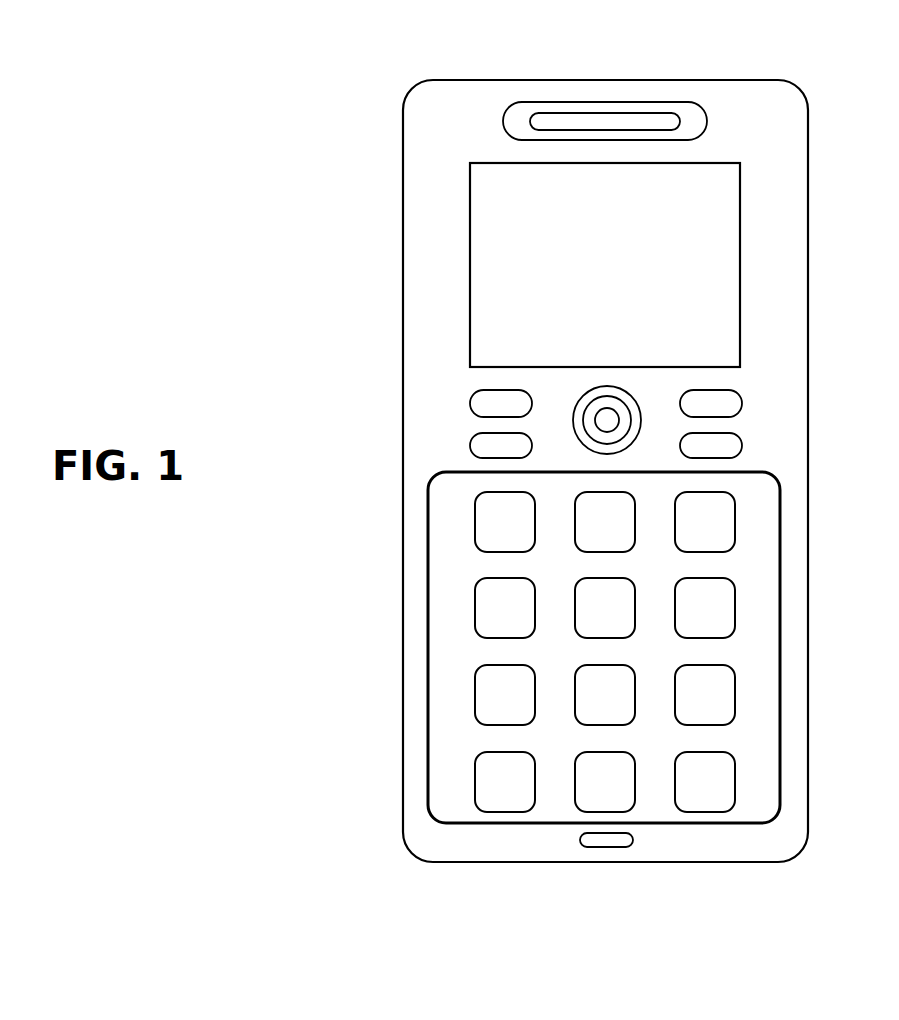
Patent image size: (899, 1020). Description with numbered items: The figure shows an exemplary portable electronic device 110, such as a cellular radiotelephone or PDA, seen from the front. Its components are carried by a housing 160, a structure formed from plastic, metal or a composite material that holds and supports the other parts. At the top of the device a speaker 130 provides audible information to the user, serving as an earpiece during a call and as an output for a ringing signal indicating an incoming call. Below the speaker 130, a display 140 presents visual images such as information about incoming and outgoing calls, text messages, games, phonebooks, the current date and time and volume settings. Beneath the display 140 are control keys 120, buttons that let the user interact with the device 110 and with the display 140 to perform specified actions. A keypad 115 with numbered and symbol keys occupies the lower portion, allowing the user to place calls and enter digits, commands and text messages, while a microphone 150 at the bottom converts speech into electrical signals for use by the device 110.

The electronic device 110 is at (259, 146).
The keypad 115 is at (556, 647).
The control keys 120 is at (829, 368).
The speaker 130 is at (605, 89).
The display 140 is at (612, 262).
The microphone 150 is at (594, 868).
The housing 160 is at (642, 471).